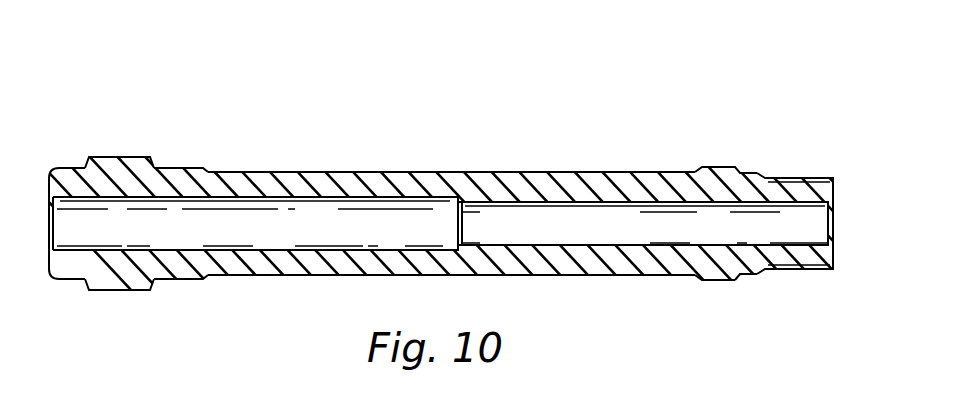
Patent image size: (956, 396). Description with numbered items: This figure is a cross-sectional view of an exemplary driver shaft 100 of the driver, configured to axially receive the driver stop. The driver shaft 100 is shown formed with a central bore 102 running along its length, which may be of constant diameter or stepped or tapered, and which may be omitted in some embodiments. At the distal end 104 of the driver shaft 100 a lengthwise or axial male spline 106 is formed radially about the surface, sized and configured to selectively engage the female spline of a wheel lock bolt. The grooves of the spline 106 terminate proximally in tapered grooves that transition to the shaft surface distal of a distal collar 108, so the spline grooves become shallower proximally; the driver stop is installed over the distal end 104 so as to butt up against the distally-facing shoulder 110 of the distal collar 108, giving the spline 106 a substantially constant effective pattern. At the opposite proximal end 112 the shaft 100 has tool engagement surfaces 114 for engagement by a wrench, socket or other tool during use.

The driver shaft 100 is at (358, 84).
The central bore 102 is at (353, 216).
The distal end 104 is at (765, 112).
The male spline 106 is at (803, 177).
The distal collar 108 is at (717, 138).
The distally-facing shoulder 110 is at (736, 279).
The proximal end 112 is at (114, 116).
The tool engagement surfaces 114 is at (107, 157).